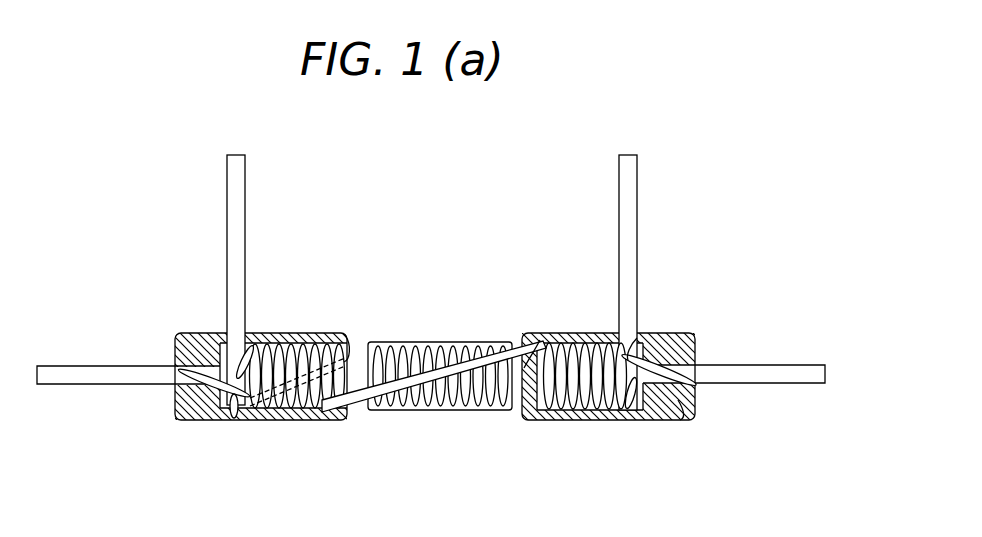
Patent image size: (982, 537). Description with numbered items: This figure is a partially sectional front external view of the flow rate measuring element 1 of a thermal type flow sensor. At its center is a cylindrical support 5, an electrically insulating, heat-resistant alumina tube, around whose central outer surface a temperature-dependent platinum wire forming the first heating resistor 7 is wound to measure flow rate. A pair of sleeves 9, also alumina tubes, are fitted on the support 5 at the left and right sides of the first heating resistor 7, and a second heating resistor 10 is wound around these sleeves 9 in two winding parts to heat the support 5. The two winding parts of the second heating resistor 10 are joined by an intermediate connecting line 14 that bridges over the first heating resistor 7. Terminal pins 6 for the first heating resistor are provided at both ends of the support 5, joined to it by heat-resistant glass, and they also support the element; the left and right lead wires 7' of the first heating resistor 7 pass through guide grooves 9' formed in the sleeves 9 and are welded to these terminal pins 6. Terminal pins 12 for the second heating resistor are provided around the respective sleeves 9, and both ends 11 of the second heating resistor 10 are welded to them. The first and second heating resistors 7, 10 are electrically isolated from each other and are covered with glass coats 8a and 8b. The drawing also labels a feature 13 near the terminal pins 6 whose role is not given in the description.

The flow rate measuring element 1 is at (497, 217).
The cylindrical support 5 is at (522, 340).
The terminal pins for the first heating resistor 6 is at (102, 385).
The first heating resistor 7 is at (440, 417).
The lead wires 7' is at (525, 380).
The glass coat 8a is at (459, 340).
The glass coat 8b is at (276, 333).
The sleeves 9 is at (663, 322).
The guide grooves 9' is at (406, 374).
The second heating resistor 10 is at (275, 420).
The ends of the second heating resistor 11 is at (210, 333).
The terminal pins for the second heating resistor 12 is at (638, 198).
The inner wire 13 is at (176, 370).
The intermediate connecting line 14 is at (450, 412).